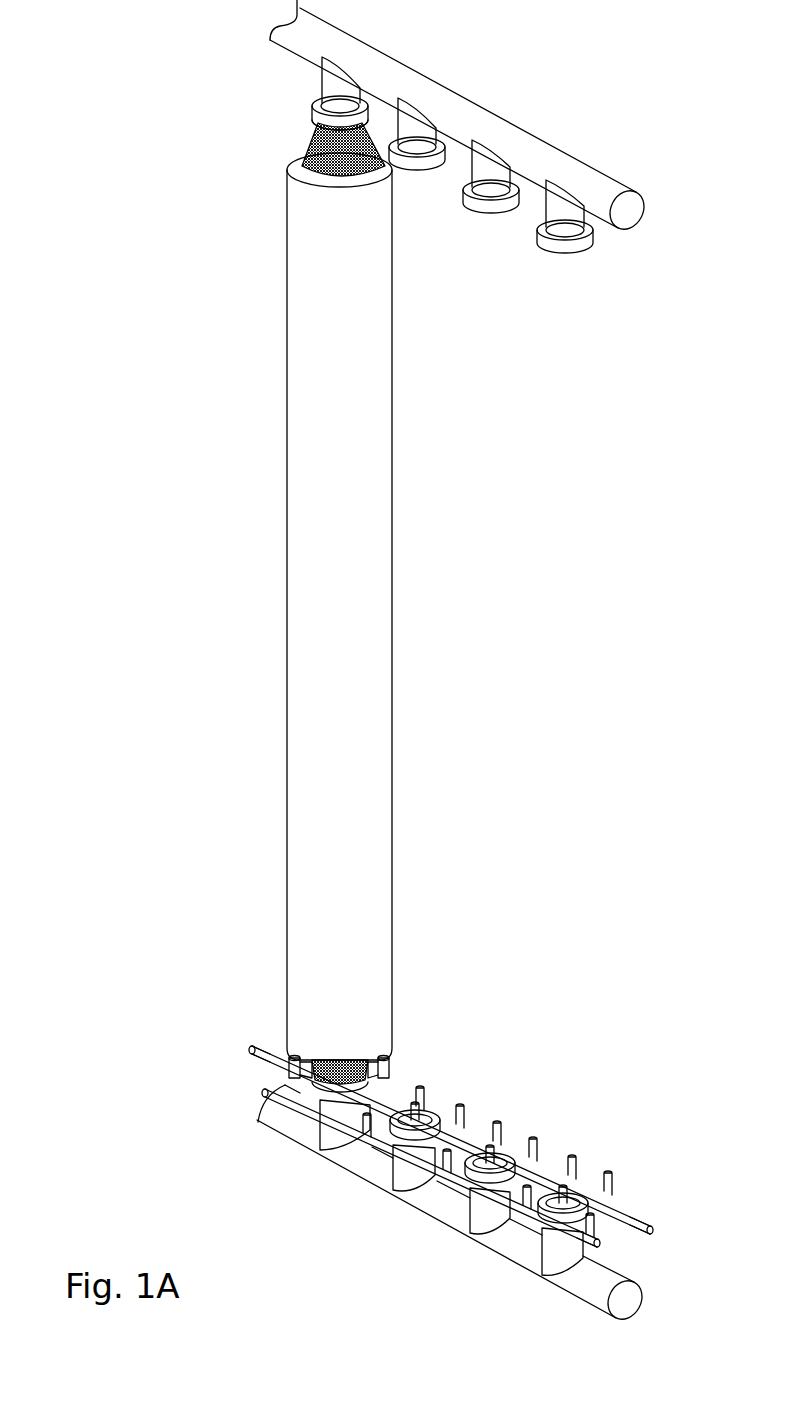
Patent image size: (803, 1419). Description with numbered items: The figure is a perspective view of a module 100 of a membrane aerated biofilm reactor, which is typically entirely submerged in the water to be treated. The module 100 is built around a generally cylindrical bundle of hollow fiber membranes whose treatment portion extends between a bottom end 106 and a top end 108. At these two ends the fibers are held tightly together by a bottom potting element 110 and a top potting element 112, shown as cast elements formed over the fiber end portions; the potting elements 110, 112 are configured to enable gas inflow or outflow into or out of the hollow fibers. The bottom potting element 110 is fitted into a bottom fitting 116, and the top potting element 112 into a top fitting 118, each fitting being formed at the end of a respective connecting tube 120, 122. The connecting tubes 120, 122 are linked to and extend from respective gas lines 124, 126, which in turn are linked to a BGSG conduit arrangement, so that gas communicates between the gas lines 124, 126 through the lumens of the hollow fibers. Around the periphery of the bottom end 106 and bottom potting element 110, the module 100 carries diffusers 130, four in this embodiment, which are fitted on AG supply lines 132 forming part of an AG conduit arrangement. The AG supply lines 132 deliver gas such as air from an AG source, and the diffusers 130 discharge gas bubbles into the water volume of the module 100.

The module 100 is at (238, 448).
The bottom end 106 is at (388, 1062).
The top end 108 is at (306, 143).
The bottom potting element 110 is at (392, 1083).
The top potting element 112 is at (330, 118).
The bottom fitting 116 is at (285, 1088).
The top fitting 118 is at (366, 118).
The connecting tube 120 is at (340, 1123).
The connecting tube 122 is at (330, 83).
The gas line 124 is at (445, 1207).
The gas line 126 is at (540, 148).
The diffusers 130 is at (268, 1064).
The AG supply line 132 is at (602, 1247).